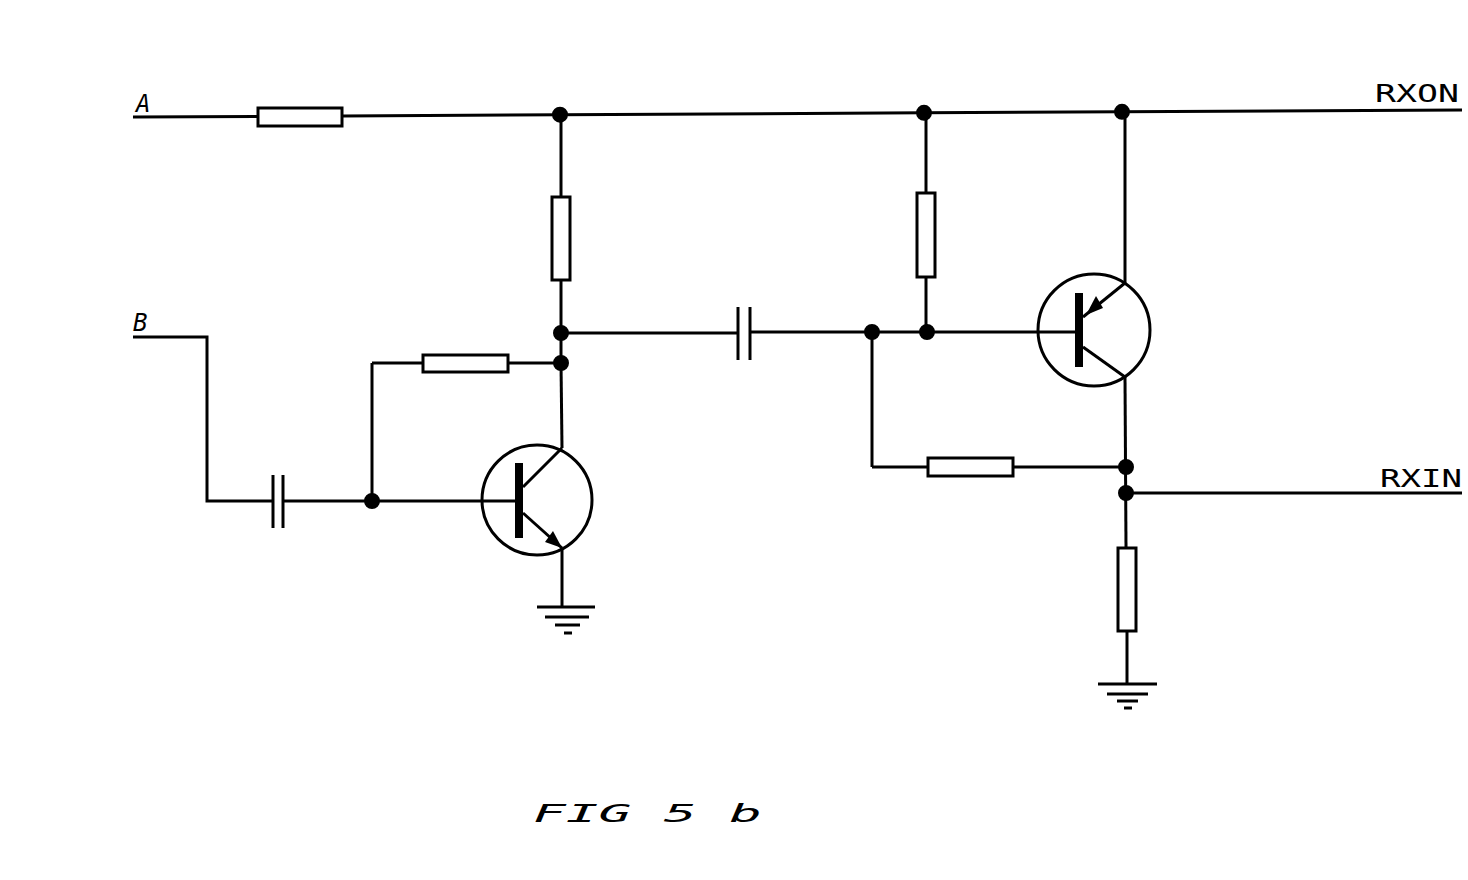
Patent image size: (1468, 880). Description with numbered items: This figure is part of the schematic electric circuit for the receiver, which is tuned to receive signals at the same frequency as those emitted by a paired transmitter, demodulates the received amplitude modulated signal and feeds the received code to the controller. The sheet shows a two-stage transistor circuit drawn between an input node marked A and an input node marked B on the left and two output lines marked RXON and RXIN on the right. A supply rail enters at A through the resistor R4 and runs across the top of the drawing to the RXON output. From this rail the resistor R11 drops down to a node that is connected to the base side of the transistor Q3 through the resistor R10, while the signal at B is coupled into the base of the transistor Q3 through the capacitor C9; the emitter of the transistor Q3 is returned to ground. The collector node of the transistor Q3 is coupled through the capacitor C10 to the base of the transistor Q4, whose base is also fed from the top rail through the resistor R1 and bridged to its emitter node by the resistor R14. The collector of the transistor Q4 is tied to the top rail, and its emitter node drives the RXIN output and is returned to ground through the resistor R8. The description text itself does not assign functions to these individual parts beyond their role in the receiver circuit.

The resistor R4 330R R4 is at (300, 81).
The resistor R11 120k R11 is at (620, 238).
The resistor R10 2M2 R10 is at (466, 392).
The capacitor C9 100n C9 is at (319, 474).
The transistor Q3 BC547 Q3 is at (542, 498).
The capacitor C10 100n C10 is at (773, 306).
The resistor R1 470k R1 is at (979, 222).
The transistor Q4 BC547 Q4 is at (1155, 330).
The resistor R14 2M2 R14 is at (999, 404).
The resistor R8 120k R8 is at (1175, 628).